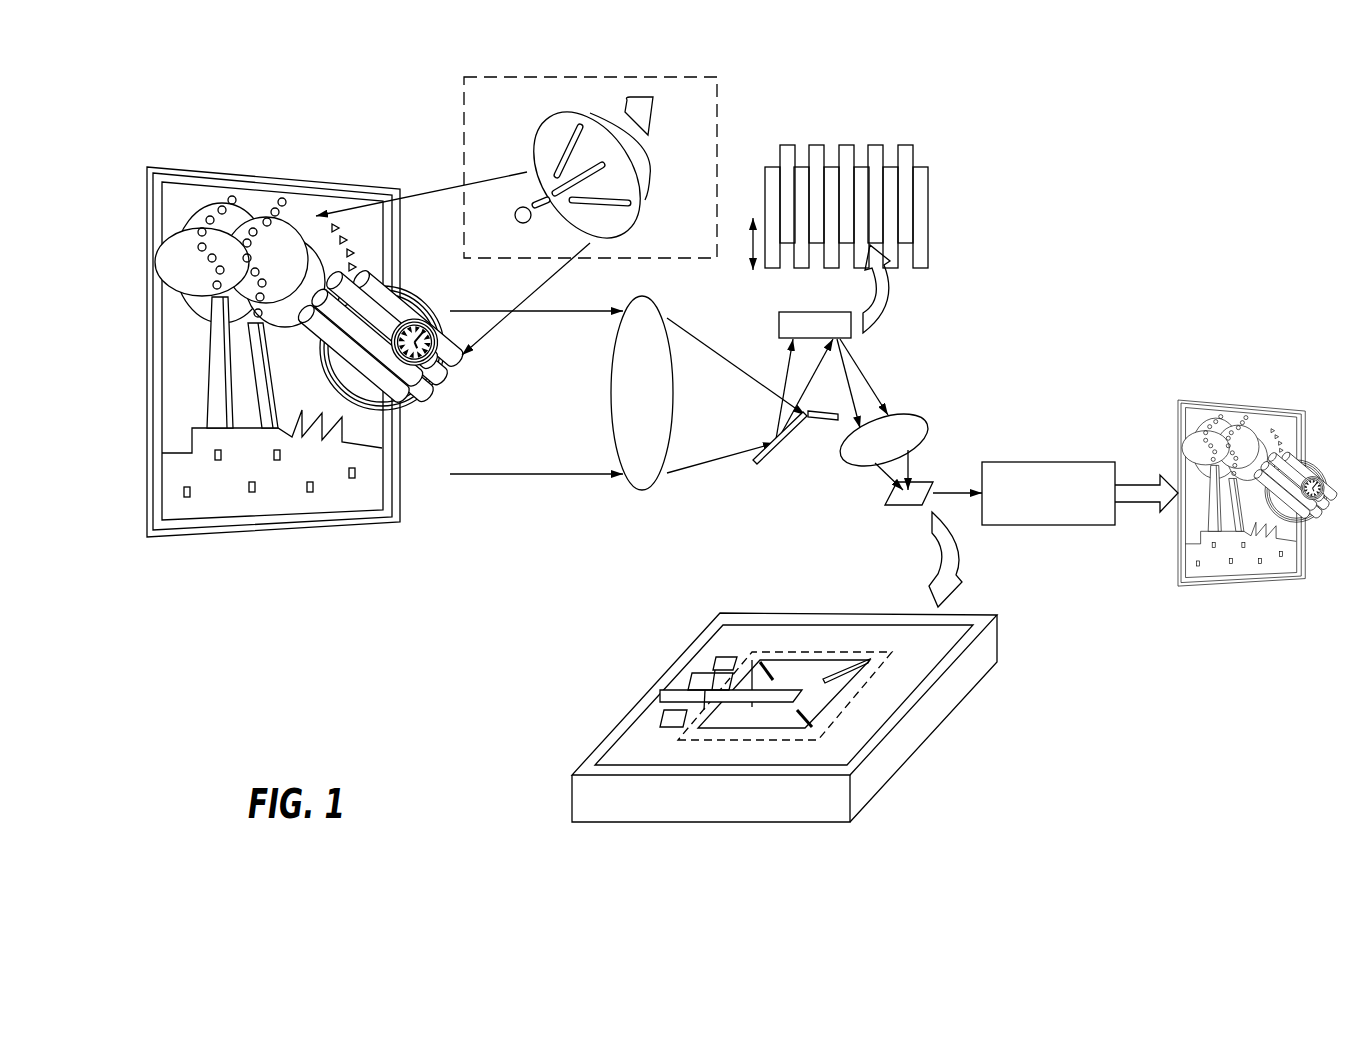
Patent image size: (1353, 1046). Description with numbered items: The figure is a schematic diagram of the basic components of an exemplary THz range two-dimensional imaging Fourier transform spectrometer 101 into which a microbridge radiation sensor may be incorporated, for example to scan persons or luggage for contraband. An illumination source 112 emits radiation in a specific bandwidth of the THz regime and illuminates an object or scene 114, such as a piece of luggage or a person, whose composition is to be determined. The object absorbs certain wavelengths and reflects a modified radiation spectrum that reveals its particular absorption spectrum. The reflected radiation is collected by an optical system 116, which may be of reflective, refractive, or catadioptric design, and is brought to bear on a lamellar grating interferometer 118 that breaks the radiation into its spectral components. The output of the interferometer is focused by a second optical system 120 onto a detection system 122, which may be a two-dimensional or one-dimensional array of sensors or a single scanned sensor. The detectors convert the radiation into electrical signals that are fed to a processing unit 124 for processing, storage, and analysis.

The two-dimensional imaging Fourier transform spectrometer 101 is at (1188, 84).
The illumination source 112 is at (591, 76).
The object or scene 114 is at (275, 530).
The optical system 116 is at (610, 394).
The lamellar grating interferometer 118 is at (930, 219).
The second optical system 120 is at (908, 416).
The detection system 122 is at (888, 496).
The processing unit 124 is at (1048, 461).